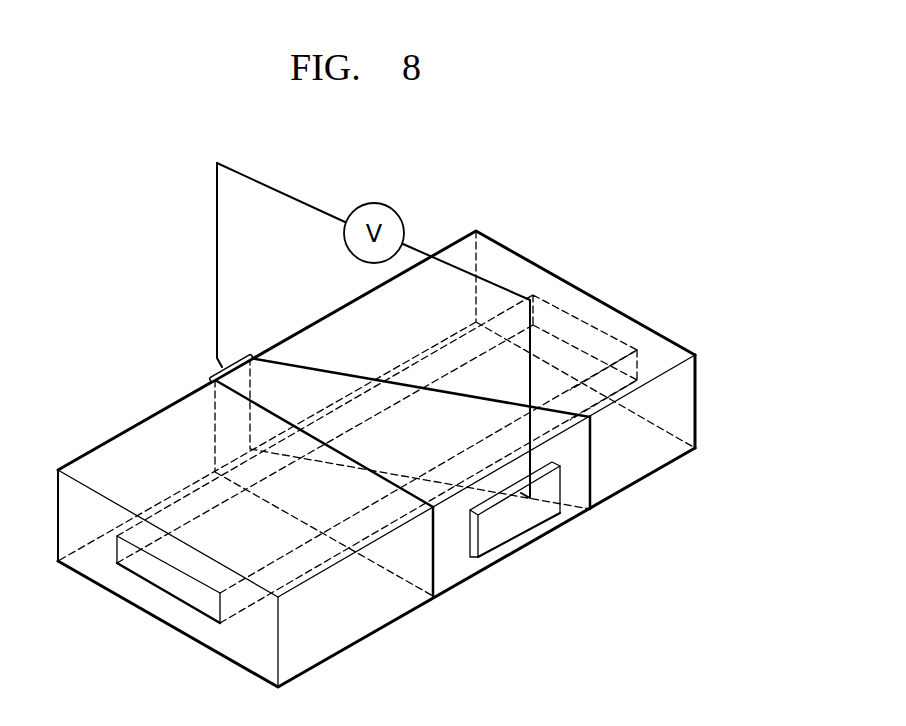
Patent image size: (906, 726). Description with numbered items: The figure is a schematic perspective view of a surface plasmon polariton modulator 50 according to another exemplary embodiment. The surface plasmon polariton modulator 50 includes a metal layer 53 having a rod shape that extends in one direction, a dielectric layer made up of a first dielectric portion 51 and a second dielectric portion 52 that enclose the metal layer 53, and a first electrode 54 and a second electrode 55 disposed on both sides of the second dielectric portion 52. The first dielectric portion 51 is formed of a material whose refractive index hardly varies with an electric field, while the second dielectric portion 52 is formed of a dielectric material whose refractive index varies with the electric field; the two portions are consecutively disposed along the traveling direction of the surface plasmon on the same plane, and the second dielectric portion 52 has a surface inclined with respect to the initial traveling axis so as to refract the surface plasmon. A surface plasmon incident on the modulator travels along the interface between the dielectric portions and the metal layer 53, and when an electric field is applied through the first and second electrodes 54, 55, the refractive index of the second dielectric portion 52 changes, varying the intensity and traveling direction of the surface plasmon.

The surface plasmon polariton modulator 50 is at (416, 466).
The first dielectric portion 51 is at (688, 400).
The second dielectric portion 52 is at (460, 572).
The metal layer 53 is at (163, 582).
The first electrode 54 is at (518, 525).
The second electrode 55 is at (212, 370).